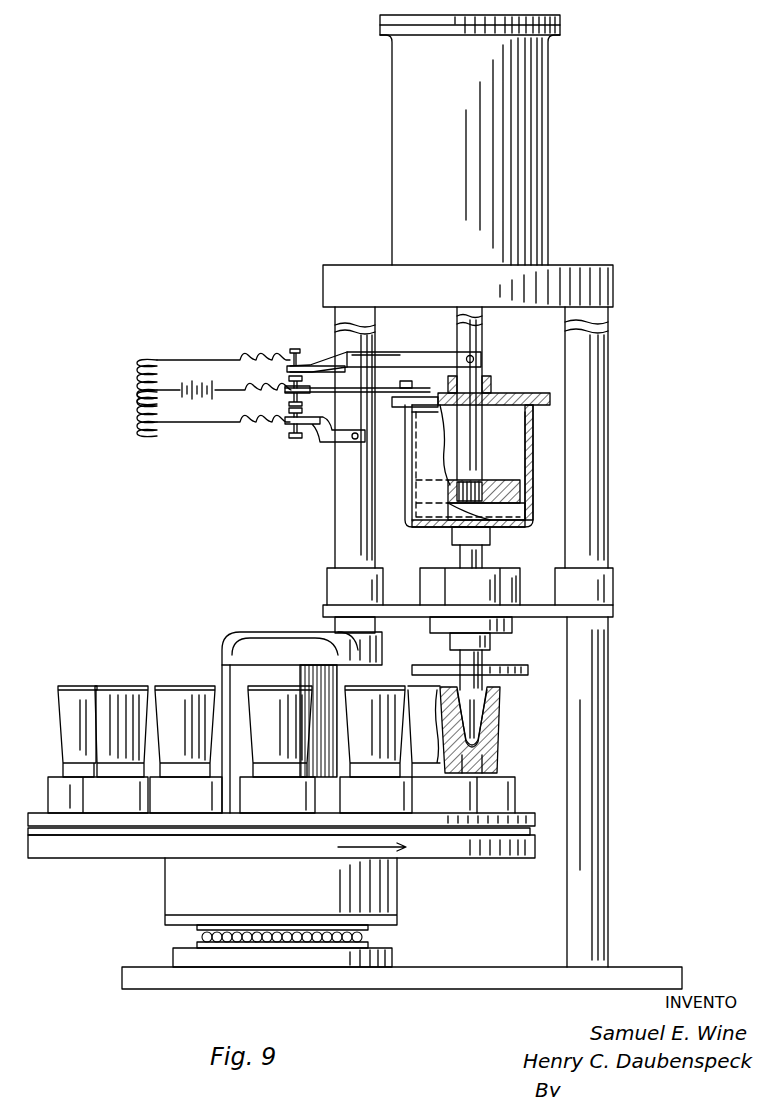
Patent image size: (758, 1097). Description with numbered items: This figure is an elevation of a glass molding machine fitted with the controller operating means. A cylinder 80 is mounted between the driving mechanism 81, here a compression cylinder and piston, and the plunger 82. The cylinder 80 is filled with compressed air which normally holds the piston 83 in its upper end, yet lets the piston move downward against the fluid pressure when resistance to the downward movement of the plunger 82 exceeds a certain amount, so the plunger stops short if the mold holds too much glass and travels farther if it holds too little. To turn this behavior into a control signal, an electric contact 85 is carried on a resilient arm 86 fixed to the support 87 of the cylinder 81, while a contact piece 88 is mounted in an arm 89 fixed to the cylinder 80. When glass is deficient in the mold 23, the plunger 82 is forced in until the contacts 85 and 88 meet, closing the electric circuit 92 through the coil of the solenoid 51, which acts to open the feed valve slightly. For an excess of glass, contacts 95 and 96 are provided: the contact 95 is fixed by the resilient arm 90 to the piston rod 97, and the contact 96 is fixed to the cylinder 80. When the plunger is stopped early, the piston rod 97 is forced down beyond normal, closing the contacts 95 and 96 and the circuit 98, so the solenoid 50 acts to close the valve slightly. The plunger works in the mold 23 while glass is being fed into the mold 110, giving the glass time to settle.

The mold 23 is at (496, 738).
The solenoid 50 is at (140, 408).
The solenoid 51 is at (140, 378).
The cylinder 80 is at (428, 526).
The driving mechanism 81 is at (548, 197).
The plunger 82 is at (478, 706).
The piston 83 is at (484, 481).
The electric contact 85 is at (334, 436).
The resilient arm 86 is at (308, 441).
The support 87 is at (340, 522).
The contact piece 88 is at (300, 395).
The arm 89 is at (380, 352).
The resilient arm 90 is at (377, 356).
The electric circuit 92 is at (172, 428).
The contact 95 is at (295, 356).
The contact 96 is at (300, 380).
The piston rod 97 is at (484, 342).
The circuit 98 is at (175, 360).
The mold 110 is at (375, 731).